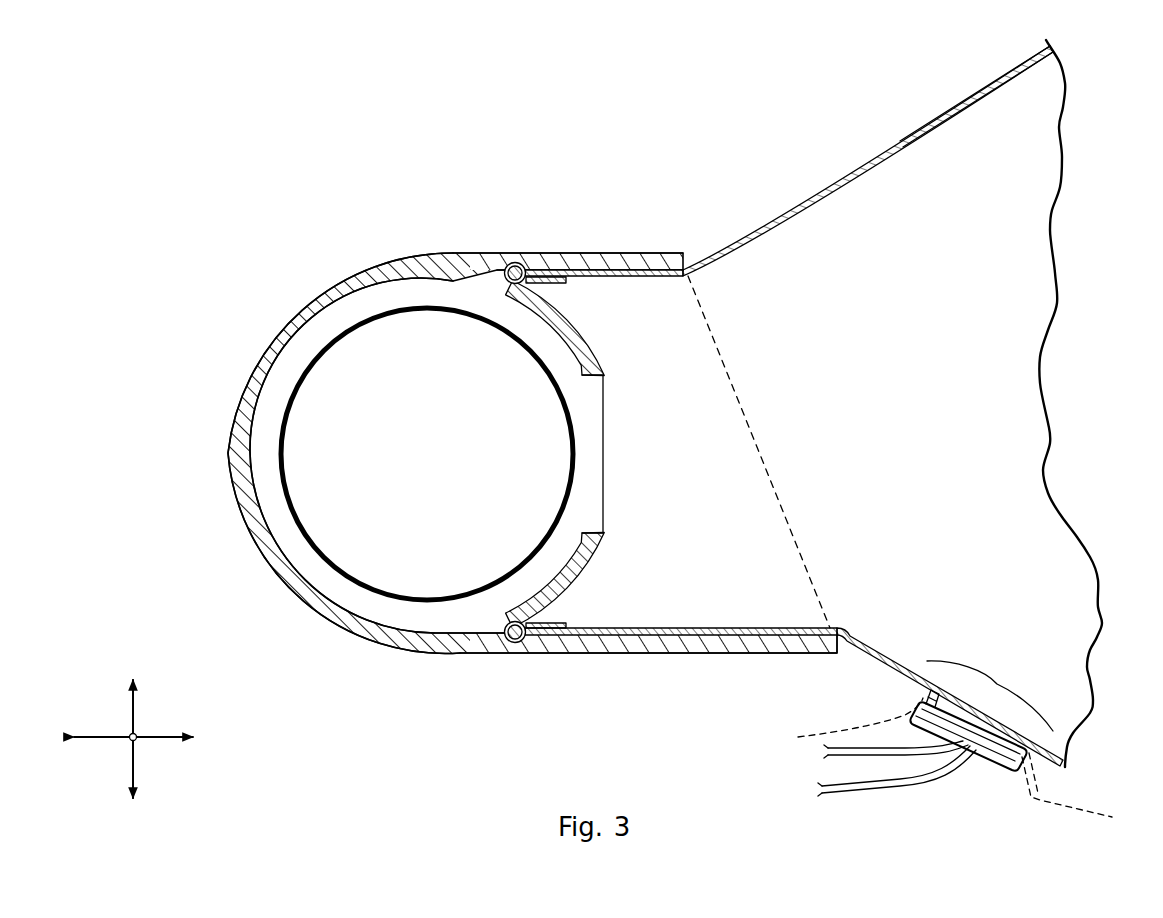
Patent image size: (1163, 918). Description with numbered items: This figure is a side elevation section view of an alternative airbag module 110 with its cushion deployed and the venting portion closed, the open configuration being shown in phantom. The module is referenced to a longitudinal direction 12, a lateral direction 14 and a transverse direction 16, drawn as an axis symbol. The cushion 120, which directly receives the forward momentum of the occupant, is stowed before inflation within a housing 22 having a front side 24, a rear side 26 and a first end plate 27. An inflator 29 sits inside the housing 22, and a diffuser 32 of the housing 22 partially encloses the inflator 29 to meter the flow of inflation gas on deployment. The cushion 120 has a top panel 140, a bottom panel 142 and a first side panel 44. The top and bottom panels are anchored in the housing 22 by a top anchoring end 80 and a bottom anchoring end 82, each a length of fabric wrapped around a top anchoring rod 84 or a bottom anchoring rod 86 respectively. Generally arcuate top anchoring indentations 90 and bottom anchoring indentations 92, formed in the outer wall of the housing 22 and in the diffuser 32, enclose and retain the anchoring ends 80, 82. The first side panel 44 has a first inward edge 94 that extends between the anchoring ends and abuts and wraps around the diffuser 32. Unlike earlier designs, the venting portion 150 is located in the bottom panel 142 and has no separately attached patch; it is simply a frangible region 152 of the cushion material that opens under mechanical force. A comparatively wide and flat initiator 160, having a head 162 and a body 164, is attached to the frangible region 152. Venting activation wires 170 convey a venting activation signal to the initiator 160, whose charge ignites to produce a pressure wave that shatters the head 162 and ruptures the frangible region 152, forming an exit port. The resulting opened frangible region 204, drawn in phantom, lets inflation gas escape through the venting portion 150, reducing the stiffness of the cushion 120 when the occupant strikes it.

The longitudinal direction 12 is at (160, 740).
The lateral direction 14 is at (132, 740).
The transverse direction 16 is at (136, 700).
The housing 22 is at (553, 676).
The front side 24 is at (735, 345).
The rear side 26 is at (230, 482).
The first end plate 27 is at (377, 296).
The inflator 29 is at (407, 459).
The diffuser 32 is at (580, 540).
The first side panel 44 is at (942, 421).
The top anchoring end 80 is at (548, 283).
The bottom anchoring end 82 is at (540, 630).
The top anchoring rod 84 is at (516, 262).
The bottom anchoring rod 86 is at (511, 622).
The top anchoring indentations 90 is at (528, 283).
The bottom anchoring indentations 92 is at (512, 648).
The first inward edge 94 is at (601, 453).
The airbag module 110 is at (534, 148).
The cushion 120 is at (846, 150).
The top panel 140 is at (963, 104).
The bottom panel 142 is at (863, 670).
The venting portion 150 is at (962, 788).
The frangible region 152 is at (990, 694).
The initiator 160 is at (1012, 775).
The head 162 is at (920, 692).
The body 164 is at (940, 717).
The venting activation wires 170 is at (822, 789).
The opened frangible region 204 is at (955, 763).